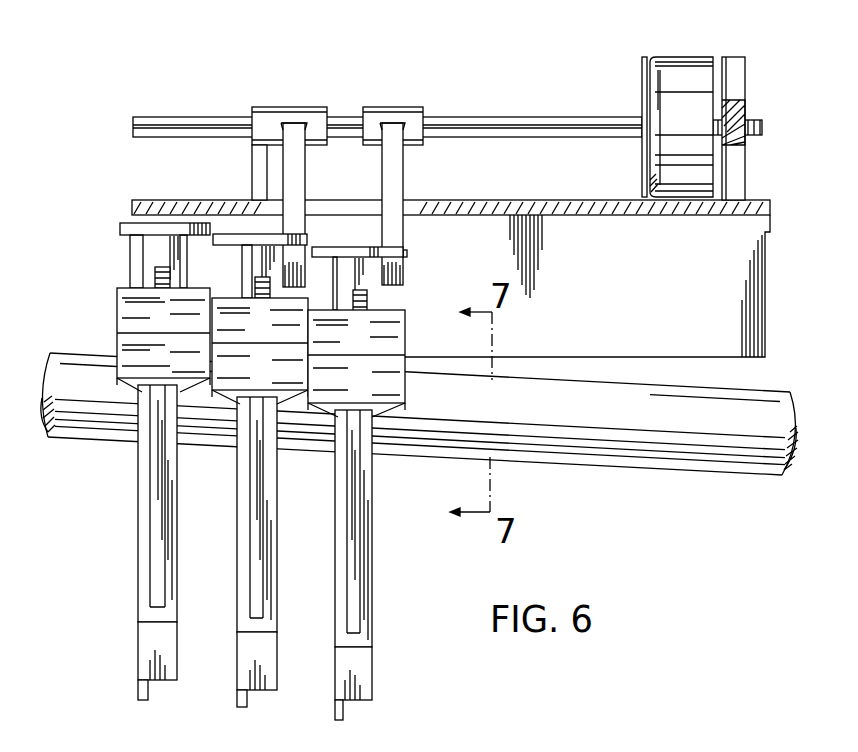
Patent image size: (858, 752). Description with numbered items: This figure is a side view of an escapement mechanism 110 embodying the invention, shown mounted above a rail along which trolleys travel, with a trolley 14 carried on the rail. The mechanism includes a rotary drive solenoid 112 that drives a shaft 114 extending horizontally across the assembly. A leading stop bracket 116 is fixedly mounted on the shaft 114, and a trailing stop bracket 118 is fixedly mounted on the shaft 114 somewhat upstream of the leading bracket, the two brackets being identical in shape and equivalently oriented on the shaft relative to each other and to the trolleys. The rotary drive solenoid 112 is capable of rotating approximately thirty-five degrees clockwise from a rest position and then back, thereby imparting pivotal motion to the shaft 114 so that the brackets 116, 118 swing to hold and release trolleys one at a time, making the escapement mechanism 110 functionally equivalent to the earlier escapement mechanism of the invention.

The actuator cylinder assembly 14 is at (406, 330).
The escapement mechanism 110 is at (736, 111).
The rotary drive solenoid 112 is at (670, 57).
The shaft 114 is at (573, 117).
The leading stop bracket 116 is at (404, 162).
The trailing stop bracket 118 is at (305, 166).